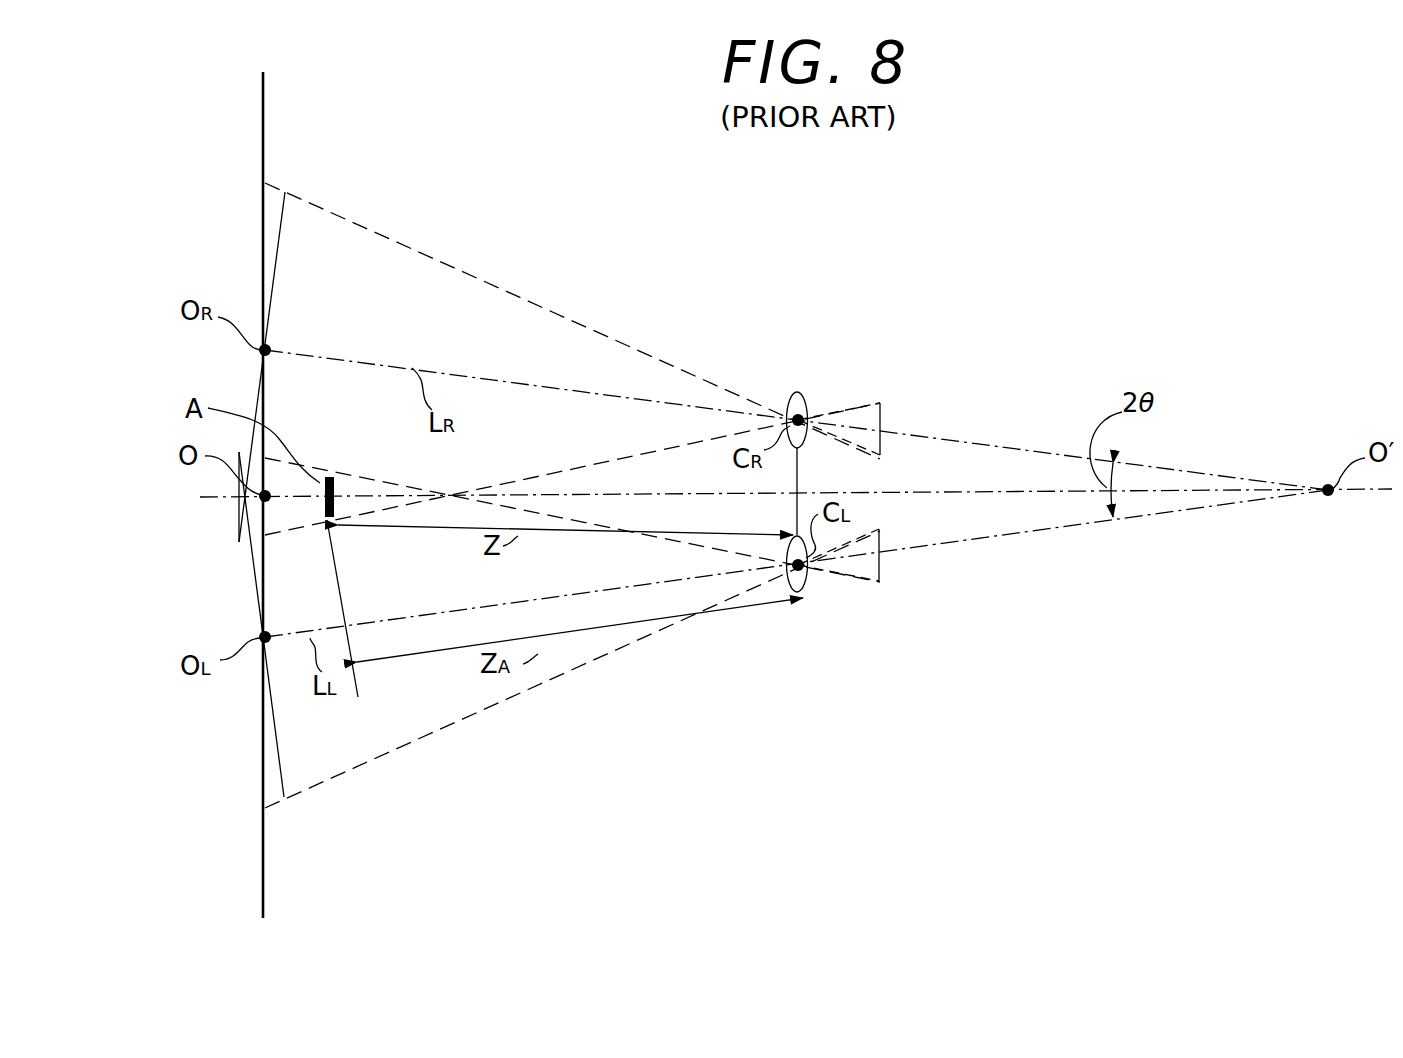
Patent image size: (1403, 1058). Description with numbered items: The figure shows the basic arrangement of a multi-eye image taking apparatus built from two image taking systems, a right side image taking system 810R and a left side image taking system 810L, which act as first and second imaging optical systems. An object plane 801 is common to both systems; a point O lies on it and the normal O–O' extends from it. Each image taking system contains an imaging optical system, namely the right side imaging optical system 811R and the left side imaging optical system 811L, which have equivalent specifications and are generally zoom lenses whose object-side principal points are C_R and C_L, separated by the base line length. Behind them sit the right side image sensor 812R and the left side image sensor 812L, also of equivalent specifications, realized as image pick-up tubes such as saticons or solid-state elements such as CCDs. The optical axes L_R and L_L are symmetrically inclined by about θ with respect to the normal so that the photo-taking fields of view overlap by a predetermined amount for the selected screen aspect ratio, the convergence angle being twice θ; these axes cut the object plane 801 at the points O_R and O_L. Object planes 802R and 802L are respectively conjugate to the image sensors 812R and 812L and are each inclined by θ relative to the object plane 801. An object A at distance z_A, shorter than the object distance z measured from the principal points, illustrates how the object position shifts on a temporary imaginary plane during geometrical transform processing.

The object plane 801 is at (263, 108).
The right side object plane 802R is at (275, 250).
The left side object plane 802L is at (275, 718).
The right side image taking system 810R is at (894, 354).
The left side image taking system 810L is at (911, 616).
The right side imaging optical system 811R is at (797, 390).
The left side imaging optical system 811L is at (806, 590).
The right side image sensor 812R is at (886, 410).
The left side image sensor 812L is at (886, 572).